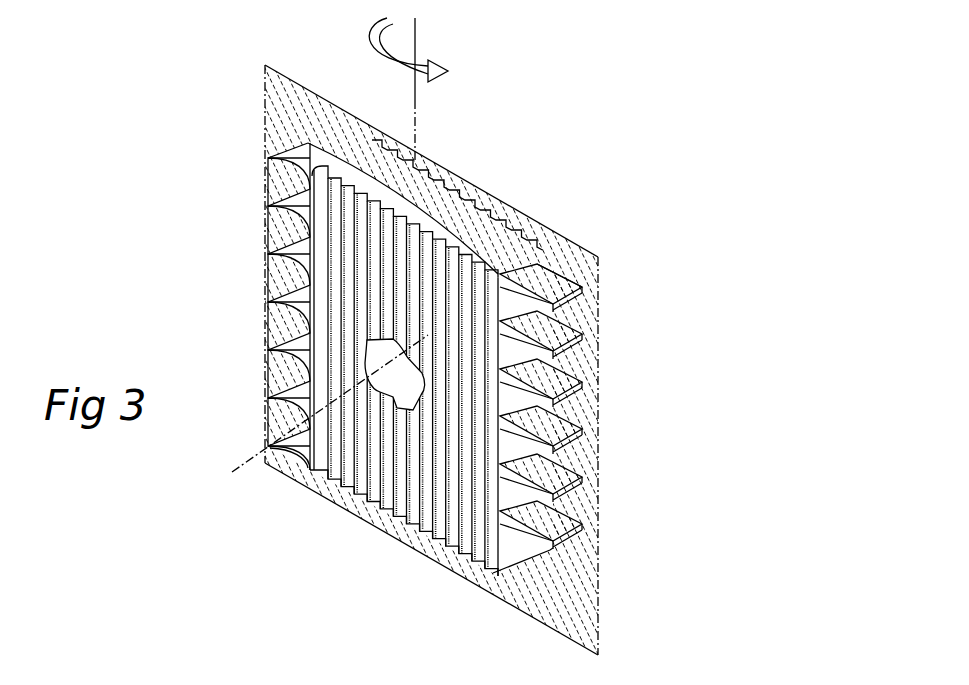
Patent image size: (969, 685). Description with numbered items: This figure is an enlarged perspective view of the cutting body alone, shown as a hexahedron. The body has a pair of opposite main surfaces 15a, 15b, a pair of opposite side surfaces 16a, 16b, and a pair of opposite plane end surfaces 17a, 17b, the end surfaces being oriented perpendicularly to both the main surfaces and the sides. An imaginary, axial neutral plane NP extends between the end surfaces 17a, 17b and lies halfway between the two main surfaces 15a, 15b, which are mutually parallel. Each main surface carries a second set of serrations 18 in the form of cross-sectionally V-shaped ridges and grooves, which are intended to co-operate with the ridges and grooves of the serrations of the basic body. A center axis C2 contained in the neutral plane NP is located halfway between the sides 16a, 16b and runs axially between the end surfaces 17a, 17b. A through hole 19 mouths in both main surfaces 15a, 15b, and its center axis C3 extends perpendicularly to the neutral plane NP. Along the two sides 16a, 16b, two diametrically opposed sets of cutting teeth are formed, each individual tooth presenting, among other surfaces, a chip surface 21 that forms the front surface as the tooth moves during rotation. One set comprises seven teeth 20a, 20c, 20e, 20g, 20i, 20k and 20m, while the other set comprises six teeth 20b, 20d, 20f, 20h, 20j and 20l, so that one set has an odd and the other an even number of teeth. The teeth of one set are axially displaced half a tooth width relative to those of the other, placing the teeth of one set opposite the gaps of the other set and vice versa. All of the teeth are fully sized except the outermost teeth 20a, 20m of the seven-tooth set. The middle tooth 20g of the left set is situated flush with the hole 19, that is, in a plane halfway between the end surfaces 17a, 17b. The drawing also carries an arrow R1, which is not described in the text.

The main surface 15a is at (356, 486).
The main surface 15b is at (394, 147).
The side surface 16a is at (302, 125).
The side surface 16b is at (579, 270).
The end surface 17a is at (440, 232).
The end surface 17b is at (493, 576).
The second set of serrations 18 is at (426, 533).
The through hole 19 is at (386, 358).
The tooth 20a is at (268, 446).
The tooth 20b is at (583, 530).
The tooth 20c is at (268, 398).
The tooth 20d is at (583, 483).
The tooth 20e is at (268, 350).
The tooth 20f is at (583, 435).
The middle tooth 20g is at (268, 302).
The tooth 20h is at (583, 388).
The tooth 20i is at (268, 254).
The tooth 20j is at (583, 340).
The tooth 20k is at (268, 206).
The tooth 20l is at (583, 293).
The tooth 20m is at (268, 158).
The chip surface 21 is at (288, 452).
The center axis C2 is at (416, 119).
The center axis of the through hole C3 is at (232, 474).
The neutral plane NP is at (497, 197).
The direction of rotation R1 is at (412, 50).